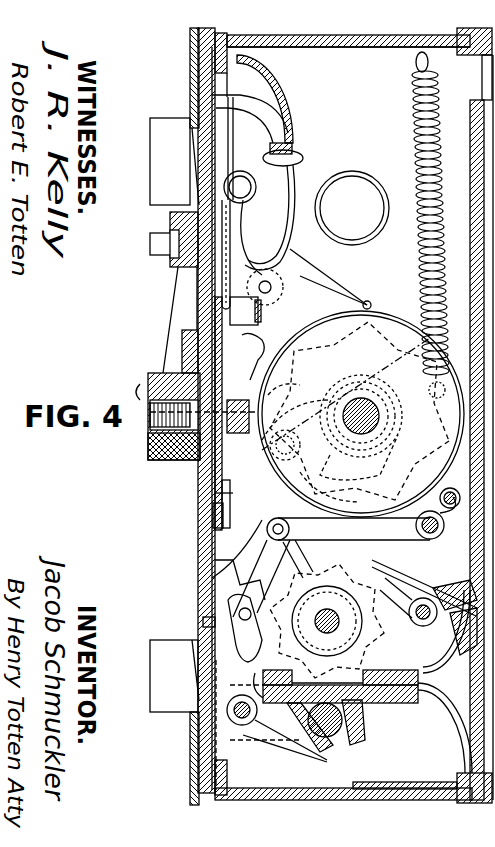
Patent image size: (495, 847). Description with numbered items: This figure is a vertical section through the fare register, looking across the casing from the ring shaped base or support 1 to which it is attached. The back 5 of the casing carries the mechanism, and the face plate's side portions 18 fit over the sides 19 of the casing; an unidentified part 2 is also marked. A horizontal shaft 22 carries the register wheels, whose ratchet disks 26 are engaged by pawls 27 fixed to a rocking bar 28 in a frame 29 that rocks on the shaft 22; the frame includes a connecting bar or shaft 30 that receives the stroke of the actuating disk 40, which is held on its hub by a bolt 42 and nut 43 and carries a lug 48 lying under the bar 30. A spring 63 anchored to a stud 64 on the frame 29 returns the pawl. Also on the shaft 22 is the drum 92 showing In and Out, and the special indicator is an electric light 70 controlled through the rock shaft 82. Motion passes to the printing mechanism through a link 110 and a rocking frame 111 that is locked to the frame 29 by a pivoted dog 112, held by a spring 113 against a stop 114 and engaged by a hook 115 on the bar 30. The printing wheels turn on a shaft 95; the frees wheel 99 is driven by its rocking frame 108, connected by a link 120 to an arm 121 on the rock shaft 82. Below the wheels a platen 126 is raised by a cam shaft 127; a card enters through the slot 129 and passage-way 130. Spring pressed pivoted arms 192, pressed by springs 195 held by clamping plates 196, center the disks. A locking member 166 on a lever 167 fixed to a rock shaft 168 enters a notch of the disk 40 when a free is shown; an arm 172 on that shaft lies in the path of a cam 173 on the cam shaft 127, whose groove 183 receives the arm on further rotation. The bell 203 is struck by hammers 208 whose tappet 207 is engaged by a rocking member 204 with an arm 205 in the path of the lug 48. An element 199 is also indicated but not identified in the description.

The base or support 1 is at (190, 93).
The mounting plate 2 is at (174, 415).
The back of the casing 5 is at (214, 155).
The side portions 18 is at (410, 33).
The sides of the casing 19 is at (312, 49).
The horizontal shaft 22 is at (380, 414).
The ratchet disks 26 is at (361, 414).
The pawls 27 is at (244, 398).
The rocking bar 28 is at (296, 412).
The rocking frame 29 is at (142, 459).
The connecting bar or shaft 30 is at (215, 468).
The actuating disk 40 is at (196, 352).
The bolt 42 is at (187, 416).
The nut 43 is at (160, 440).
The lug 48 is at (215, 490).
The spring 63 is at (413, 135).
The stud 64 is at (427, 387).
The electric light 70 is at (352, 208).
The rock shaft 82 is at (432, 538).
The drum 92 is at (257, 352).
The shaft 95 is at (327, 621).
The frees recording wheel 99 is at (387, 650).
The rocking frame 108 is at (327, 621).
The link 110 is at (271, 558).
The rocking frame 111 is at (328, 430).
The pivoted dog 112 is at (280, 477).
The spring 113 is at (359, 458).
The stop 114 is at (330, 487).
The hook 115 is at (232, 523).
The link 120 is at (300, 558).
The arm 121 is at (348, 529).
The platen 126 is at (382, 702).
The cam shaft 127 is at (345, 722).
The slot 129 is at (490, 688).
The passage-way 130 is at (402, 704).
The locking member 166 is at (234, 591).
The lever 167 is at (263, 680).
The rock shaft 168 is at (242, 725).
The arm 172 is at (292, 750).
The cam 173 is at (332, 745).
The groove 183 is at (355, 738).
The spring pressed pivoted arm 192 is at (367, 305).
The springs 195 is at (349, 408).
The clamping plates 196 is at (304, 235).
The pivot pin 199 is at (452, 509).
The bell 203 is at (294, 110).
The rocking member 204 is at (180, 340).
The arm 205 is at (213, 507).
The tappet 207 is at (264, 297).
The hammer 208 is at (255, 187).